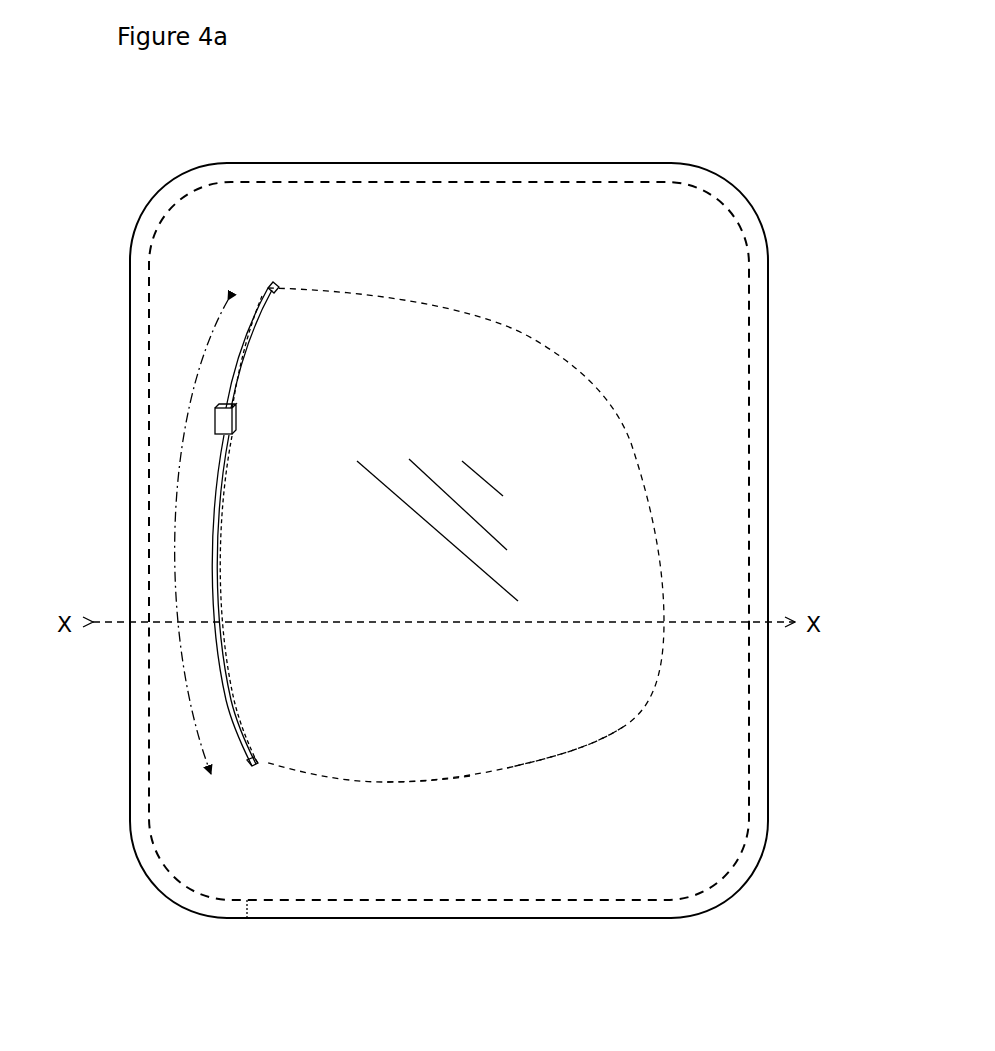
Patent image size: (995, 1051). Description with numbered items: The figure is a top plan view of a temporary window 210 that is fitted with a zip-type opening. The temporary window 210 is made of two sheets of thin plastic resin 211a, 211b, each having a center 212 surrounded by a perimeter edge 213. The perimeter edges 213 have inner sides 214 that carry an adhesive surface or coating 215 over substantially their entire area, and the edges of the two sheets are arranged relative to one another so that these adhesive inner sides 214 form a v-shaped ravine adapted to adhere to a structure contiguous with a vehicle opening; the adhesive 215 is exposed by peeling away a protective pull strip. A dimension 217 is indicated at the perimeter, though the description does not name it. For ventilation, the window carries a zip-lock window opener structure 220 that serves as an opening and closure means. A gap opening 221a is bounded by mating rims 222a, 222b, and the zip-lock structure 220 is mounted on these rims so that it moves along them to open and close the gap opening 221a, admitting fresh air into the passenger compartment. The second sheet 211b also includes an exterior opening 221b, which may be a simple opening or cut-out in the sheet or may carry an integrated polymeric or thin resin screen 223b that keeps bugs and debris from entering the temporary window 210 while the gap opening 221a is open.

The temporary window 210 is at (302, 125).
The sheet of thin plastic resin 211a is at (197, 280).
The sheet of thin plastic resin 211b is at (227, 195).
The center 212 is at (625, 312).
The perimeter edge 213 is at (462, 163).
The inner sides 214 is at (358, 172).
The adhesive surface/coating 215 is at (592, 180).
The border width 217 is at (247, 908).
The zip-lock window opener structure 220 is at (213, 422).
The gap opening 221a is at (231, 707).
The exterior opening 221b is at (563, 750).
The mating rim 222a is at (230, 372).
The mating rim 222b is at (240, 342).
The polymeric or thin resin screen 223b is at (508, 742).